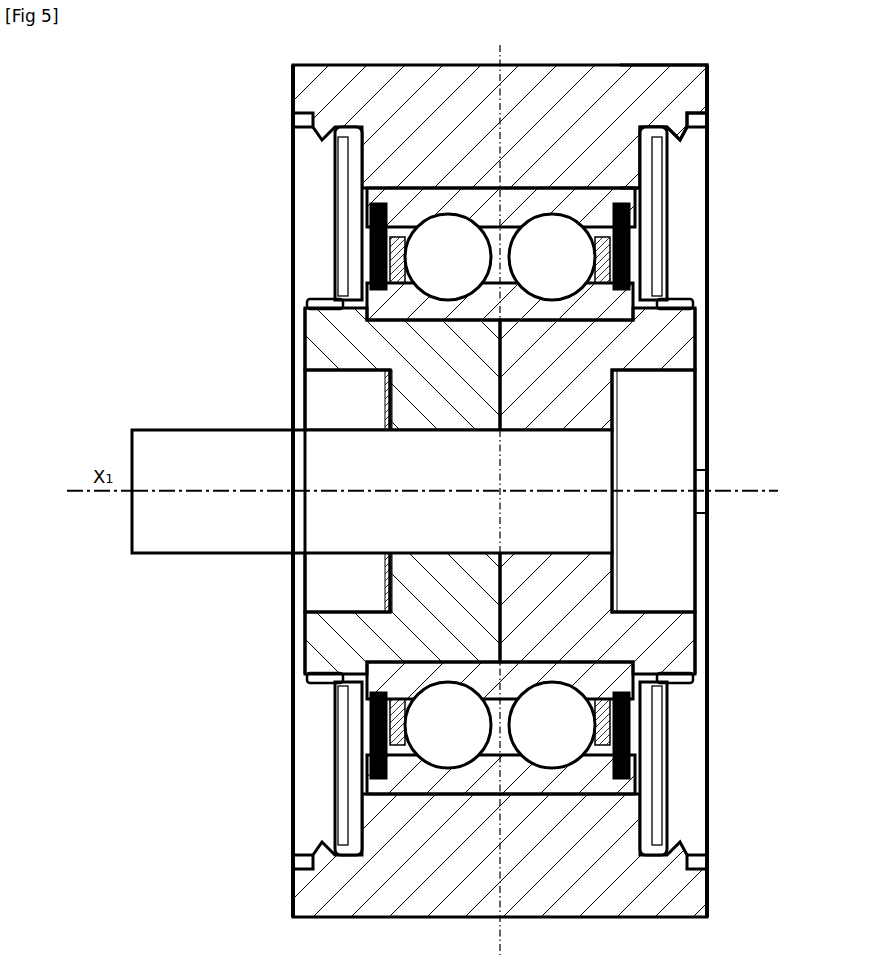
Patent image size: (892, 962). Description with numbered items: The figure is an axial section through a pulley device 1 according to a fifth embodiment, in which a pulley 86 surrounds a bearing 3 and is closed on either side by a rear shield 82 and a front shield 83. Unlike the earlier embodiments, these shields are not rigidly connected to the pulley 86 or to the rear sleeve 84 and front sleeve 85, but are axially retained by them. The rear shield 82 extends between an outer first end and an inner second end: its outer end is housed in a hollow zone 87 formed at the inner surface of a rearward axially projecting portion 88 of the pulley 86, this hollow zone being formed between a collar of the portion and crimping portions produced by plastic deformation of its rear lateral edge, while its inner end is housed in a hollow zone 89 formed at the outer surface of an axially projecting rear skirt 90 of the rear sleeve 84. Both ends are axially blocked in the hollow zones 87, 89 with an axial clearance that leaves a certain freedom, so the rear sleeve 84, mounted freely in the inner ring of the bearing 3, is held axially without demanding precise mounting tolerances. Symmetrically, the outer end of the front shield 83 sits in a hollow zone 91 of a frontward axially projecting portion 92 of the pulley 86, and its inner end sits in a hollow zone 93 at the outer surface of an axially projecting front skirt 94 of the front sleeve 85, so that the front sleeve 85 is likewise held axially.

The pulley device 1 is at (106, 567).
The bearing 3 is at (428, 737).
The rear shield 82 is at (340, 224).
The front shield 83 is at (665, 222).
The rear sleeve 84 is at (378, 403).
The front sleeve 85 is at (622, 403).
The pulley 86 is at (405, 894).
The hollow zone 87 is at (333, 140).
The rearward axially projecting portion 88 is at (318, 100).
The hollow zone 89 is at (333, 297).
The rear skirt 90 is at (322, 345).
The hollow zone 91 is at (667, 140).
The frontward axially projecting portion 92 is at (693, 100).
The hollow zone 93 is at (667, 297).
The front skirt 94 is at (680, 345).